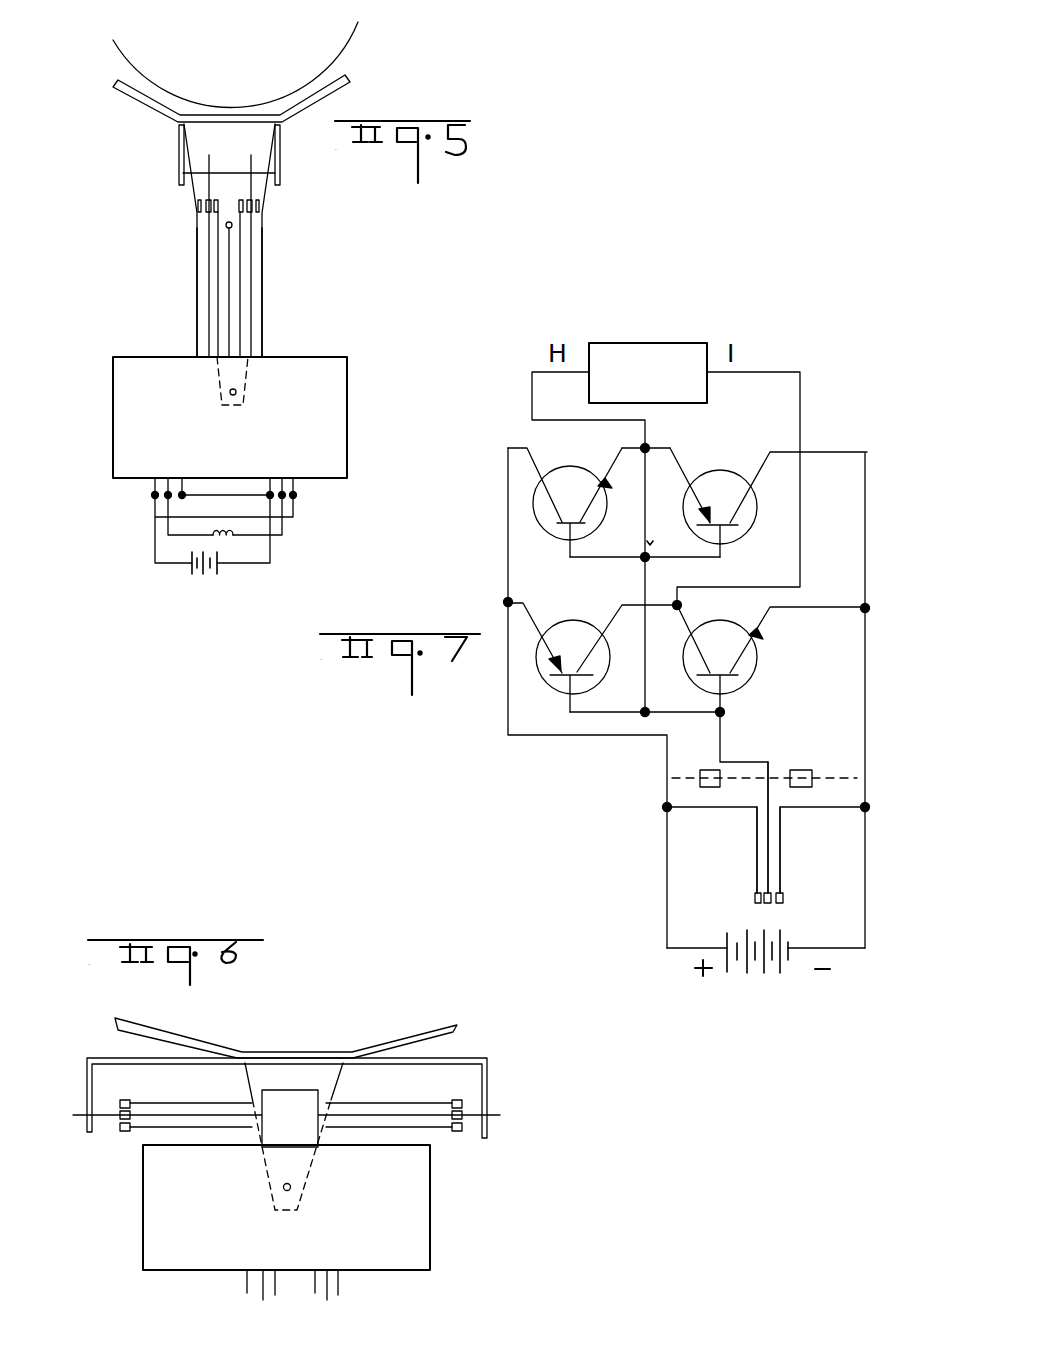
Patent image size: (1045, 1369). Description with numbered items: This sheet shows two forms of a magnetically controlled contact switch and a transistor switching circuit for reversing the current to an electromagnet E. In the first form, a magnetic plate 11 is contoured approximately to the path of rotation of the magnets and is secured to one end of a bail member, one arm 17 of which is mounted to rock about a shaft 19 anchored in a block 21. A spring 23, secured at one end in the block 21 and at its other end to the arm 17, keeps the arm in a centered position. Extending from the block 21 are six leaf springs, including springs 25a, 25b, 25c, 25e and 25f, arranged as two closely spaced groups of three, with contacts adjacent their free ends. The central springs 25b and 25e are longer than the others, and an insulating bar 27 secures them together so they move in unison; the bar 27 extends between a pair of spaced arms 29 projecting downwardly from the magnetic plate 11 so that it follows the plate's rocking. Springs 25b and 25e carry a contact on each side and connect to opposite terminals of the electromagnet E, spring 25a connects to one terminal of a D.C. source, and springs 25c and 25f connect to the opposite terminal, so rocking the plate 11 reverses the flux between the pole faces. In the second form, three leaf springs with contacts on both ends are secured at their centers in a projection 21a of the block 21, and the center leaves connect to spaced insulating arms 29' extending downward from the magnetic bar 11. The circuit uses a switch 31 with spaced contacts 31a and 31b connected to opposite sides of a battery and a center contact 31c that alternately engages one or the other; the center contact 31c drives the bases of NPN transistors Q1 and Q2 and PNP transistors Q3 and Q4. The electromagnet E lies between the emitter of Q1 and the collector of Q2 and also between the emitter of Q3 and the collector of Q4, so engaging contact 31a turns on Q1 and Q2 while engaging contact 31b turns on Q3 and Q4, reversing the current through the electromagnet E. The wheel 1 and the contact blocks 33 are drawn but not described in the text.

In FIG. 5, the wheel 1 is at (342, 42).
In FIG. 5, the magnetic plate 11 is at (133, 100).
In FIG. 6, the magnetic plate 11 is at (415, 1037).
In FIG. 5, the spaced arms 29 is at (258, 155).
In FIG. 5, the insulating bar 27 is at (203, 177).
In FIG. 5, the arm 17 is at (270, 189).
In FIG. 5, the leaf spring 25a is at (197, 230).
In FIG. 5, the leaf spring 25b is at (208, 253).
In FIG. 5, the leaf spring 25c is at (217, 293).
In FIG. 5, the leaf spring 25e is at (250, 260).
In FIG. 5, the leaf spring 25f is at (240, 293).
In FIG. 5, the spring 23 is at (230, 323).
In FIG. 5, the block 21 is at (133, 372).
In FIG. 6, the block 21 is at (420, 1225).
In FIG. 5, the shaft 19 is at (230, 393).
In FIG. 7, the electromagnet E is at (615, 358).
In FIG. 7, the transistor Q1 is at (576, 502).
In FIG. 7, the transistor Q2 is at (771, 658).
In FIG. 7, the transistor Q3 is at (768, 502).
In FIG. 7, the transistor Q4 is at (592, 657).
In FIG. 7, the contacts 33 is at (706, 770).
In FIG. 7, the switch 31 is at (746, 830).
In FIG. 7, the contact 31a is at (755, 858).
In FIG. 7, the contact 31b is at (780, 858).
In FIG. 7, the center contact 31c is at (770, 882).
In FIG. 6, the insulating arms 29' is at (293, 1098).
In FIG. 6, the projection 21a is at (288, 1107).